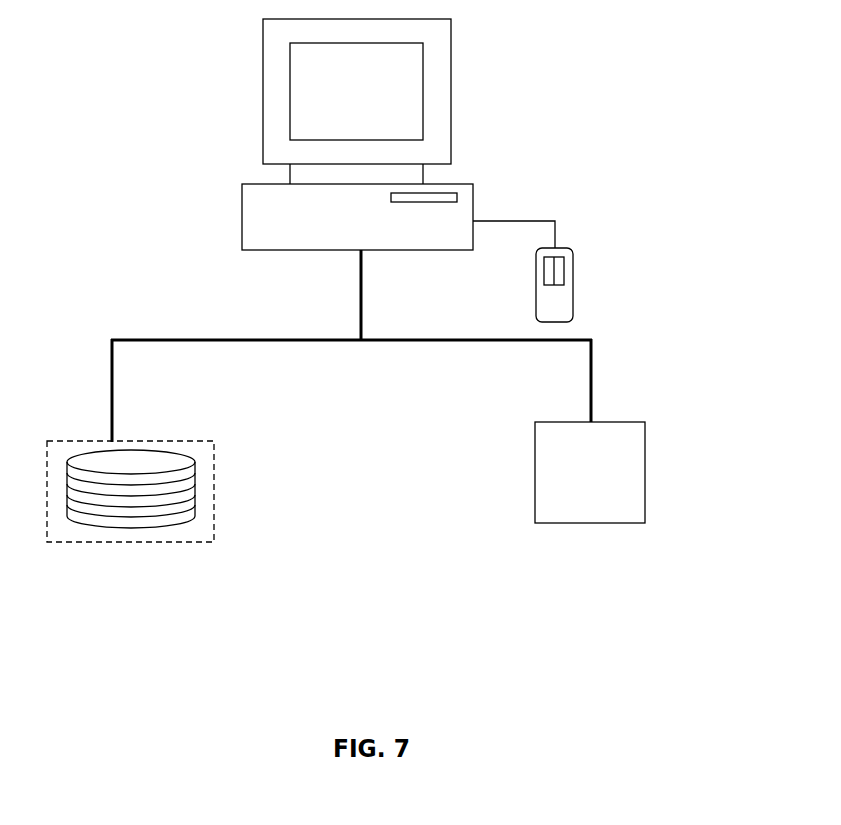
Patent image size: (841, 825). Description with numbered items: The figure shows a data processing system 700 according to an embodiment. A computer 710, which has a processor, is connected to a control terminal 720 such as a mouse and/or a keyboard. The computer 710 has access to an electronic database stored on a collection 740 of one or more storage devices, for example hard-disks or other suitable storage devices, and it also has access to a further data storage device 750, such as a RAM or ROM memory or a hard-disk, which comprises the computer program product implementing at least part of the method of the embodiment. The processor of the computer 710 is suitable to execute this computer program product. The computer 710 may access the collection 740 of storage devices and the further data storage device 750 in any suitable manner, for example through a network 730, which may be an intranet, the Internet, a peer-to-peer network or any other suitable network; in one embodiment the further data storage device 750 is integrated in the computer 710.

The data processing system 700 is at (374, 556).
The computer 710 is at (443, 103).
The control terminal 720 is at (565, 300).
The network 730 is at (114, 400).
The collection of one or more storage devices 740 is at (207, 510).
The further data storage device 750 is at (630, 485).